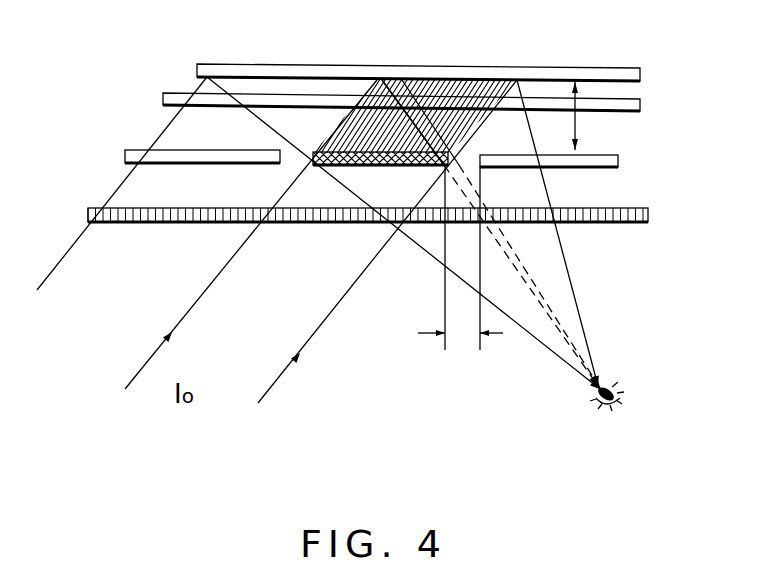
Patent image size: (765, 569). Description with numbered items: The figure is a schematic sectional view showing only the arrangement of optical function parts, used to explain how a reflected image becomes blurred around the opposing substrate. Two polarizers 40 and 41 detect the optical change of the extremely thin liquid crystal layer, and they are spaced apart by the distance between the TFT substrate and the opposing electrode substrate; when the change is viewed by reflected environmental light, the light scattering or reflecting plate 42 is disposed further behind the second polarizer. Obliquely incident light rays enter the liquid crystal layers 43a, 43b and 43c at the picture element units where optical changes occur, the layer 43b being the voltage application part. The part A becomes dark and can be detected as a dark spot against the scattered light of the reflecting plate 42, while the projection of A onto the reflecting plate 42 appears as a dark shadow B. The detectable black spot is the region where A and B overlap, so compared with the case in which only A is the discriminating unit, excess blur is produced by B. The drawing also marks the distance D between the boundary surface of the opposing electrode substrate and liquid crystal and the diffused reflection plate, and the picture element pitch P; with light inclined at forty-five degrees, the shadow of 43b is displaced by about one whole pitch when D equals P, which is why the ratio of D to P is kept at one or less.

The polarizer 40 is at (648, 219).
The polarizer 41 is at (640, 106).
The reflecting plate 42 is at (640, 75).
The liquid crystal layer 43a is at (185, 163).
The liquid crystal layer 43b is at (328, 165).
The liquid crystal layer 43c is at (618, 162).
The dark part A is at (367, 152).
The shadow part B is at (441, 80).
The distance D is at (575, 122).
The picture element pitch P is at (460, 257).